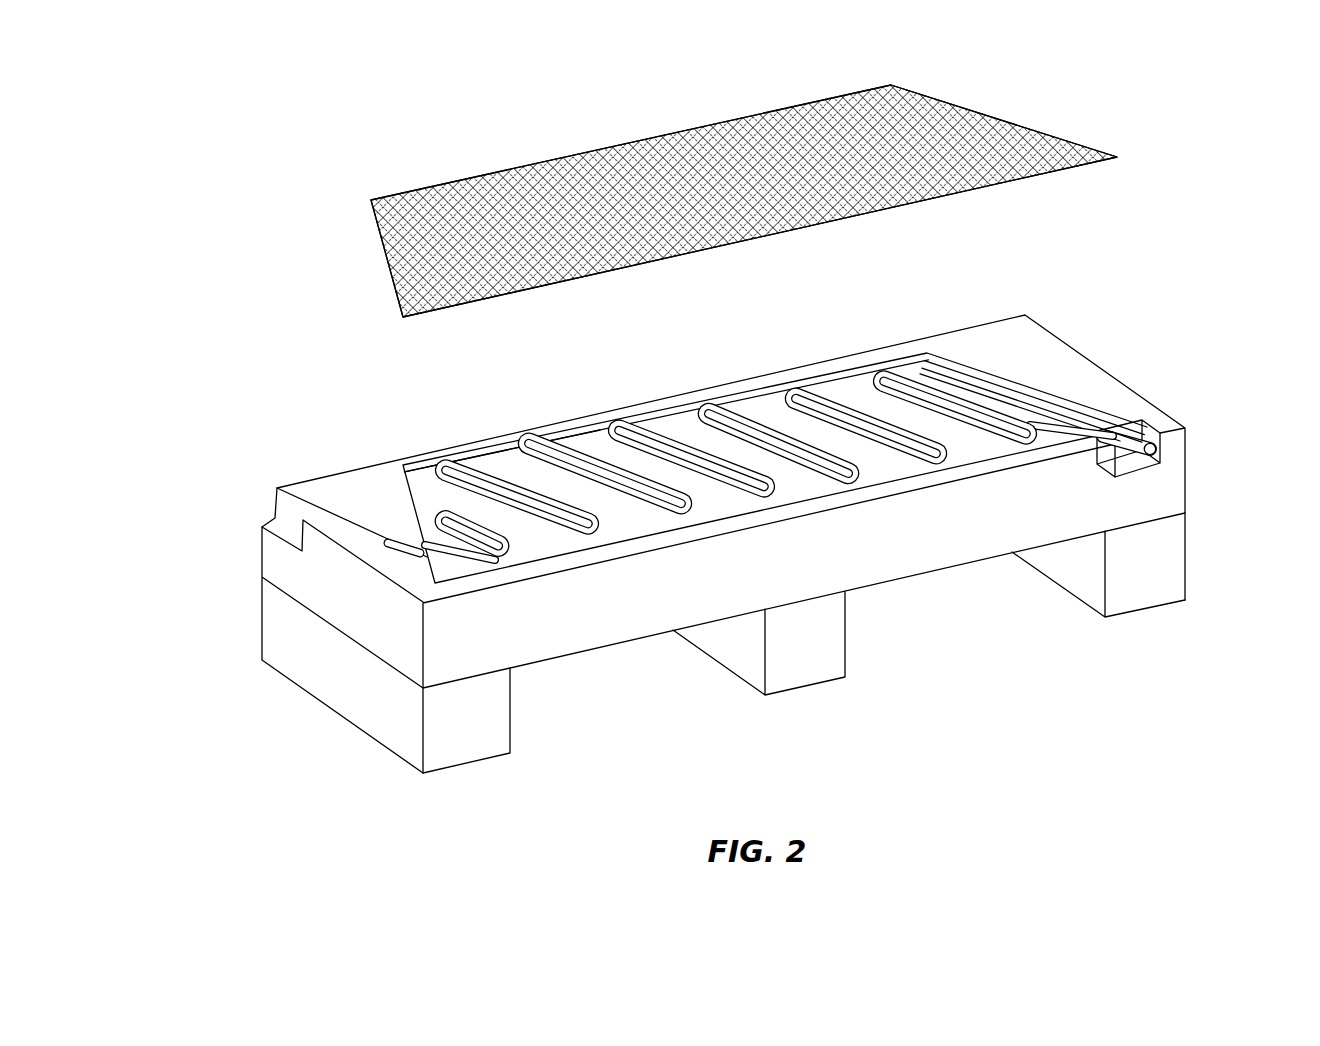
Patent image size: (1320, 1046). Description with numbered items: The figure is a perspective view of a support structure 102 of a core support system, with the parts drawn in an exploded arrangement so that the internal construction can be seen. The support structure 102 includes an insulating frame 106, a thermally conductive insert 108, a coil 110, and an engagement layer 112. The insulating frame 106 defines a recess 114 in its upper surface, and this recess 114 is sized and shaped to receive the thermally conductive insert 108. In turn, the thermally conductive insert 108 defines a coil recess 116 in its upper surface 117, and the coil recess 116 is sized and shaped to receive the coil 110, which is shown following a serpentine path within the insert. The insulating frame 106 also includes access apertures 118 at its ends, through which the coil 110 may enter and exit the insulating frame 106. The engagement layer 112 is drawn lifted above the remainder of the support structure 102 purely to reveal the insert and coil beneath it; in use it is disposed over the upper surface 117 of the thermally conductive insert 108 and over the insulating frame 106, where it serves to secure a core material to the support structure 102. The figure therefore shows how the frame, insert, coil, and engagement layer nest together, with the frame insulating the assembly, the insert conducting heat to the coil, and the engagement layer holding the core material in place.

The support structure 102 is at (1180, 340).
The insulating frame 106 is at (1172, 497).
The thermally conductive insert 108 is at (775, 415).
The coil 110 is at (530, 437).
The engagement layer 112 is at (990, 118).
The recess 114 is at (1030, 378).
The coil recess 116 is at (940, 374).
The upper surface 117 is at (598, 435).
The access aperture 118 is at (256, 503).